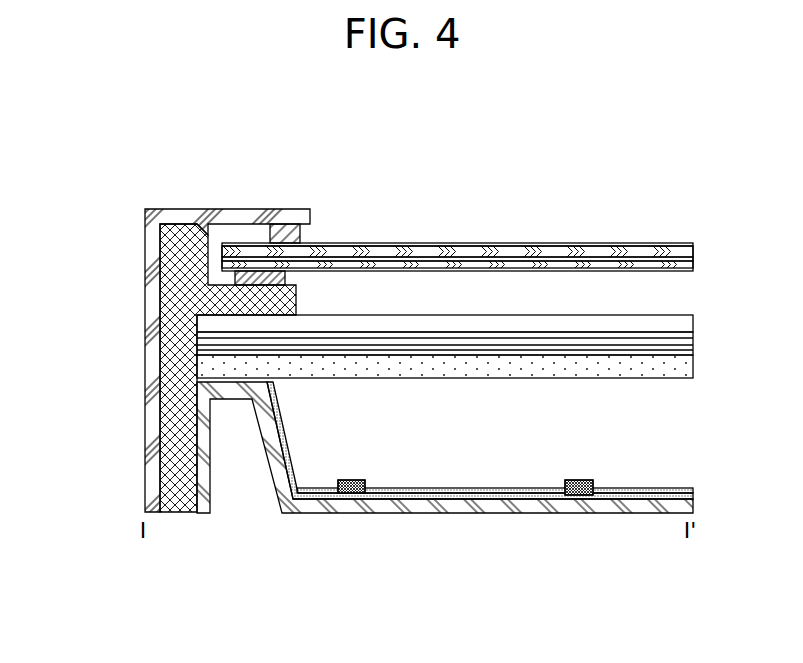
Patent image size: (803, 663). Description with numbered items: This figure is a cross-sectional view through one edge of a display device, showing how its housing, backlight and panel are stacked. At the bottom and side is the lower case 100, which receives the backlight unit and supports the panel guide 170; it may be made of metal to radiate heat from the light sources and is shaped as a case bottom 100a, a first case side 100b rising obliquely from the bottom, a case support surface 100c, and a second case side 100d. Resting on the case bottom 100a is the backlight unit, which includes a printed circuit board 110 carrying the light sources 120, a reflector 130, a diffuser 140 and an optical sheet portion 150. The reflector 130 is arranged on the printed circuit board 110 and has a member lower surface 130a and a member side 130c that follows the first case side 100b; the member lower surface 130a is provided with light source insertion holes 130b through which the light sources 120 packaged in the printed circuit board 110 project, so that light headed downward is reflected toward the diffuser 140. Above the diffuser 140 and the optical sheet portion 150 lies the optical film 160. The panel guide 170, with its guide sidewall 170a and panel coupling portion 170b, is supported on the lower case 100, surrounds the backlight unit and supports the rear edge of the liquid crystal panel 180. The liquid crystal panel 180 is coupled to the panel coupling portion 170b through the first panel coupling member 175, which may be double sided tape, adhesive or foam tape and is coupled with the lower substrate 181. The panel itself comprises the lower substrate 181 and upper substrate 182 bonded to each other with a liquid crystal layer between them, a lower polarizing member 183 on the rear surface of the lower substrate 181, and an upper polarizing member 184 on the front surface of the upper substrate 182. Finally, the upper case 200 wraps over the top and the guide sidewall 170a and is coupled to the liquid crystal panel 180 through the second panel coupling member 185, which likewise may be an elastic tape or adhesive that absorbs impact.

The lower case 100 is at (175, 592).
The case bottom 100a is at (352, 501).
The first case side 100b is at (280, 483).
The case support surface 100c is at (233, 393).
The second case side 100d is at (205, 505).
The printed circuit board 110 is at (493, 501).
The light sources 120 is at (582, 496).
The reflector 130 is at (310, 418).
The member lower surface 130a is at (464, 488).
The light source insertion holes 130b is at (368, 483).
The member side 130c is at (290, 470).
The diffuser 140 is at (662, 367).
The optical sheet portion 150 is at (700, 333).
The optical film 160 is at (682, 323).
The panel guide 170 is at (70, 310).
The guide sidewall 170a is at (178, 390).
The panel coupling portion 170b is at (237, 300).
The first panel coupling member 175 is at (247, 280).
The liquid crystal panel 180 is at (393, 148).
The lower substrate 181 is at (441, 262).
The upper substrate 182 is at (494, 253).
The lower polarizing member 183 is at (390, 271).
The upper polarizing member 184 is at (547, 245).
The second panel coupling member 185 is at (285, 238).
The upper case 200 is at (182, 215).